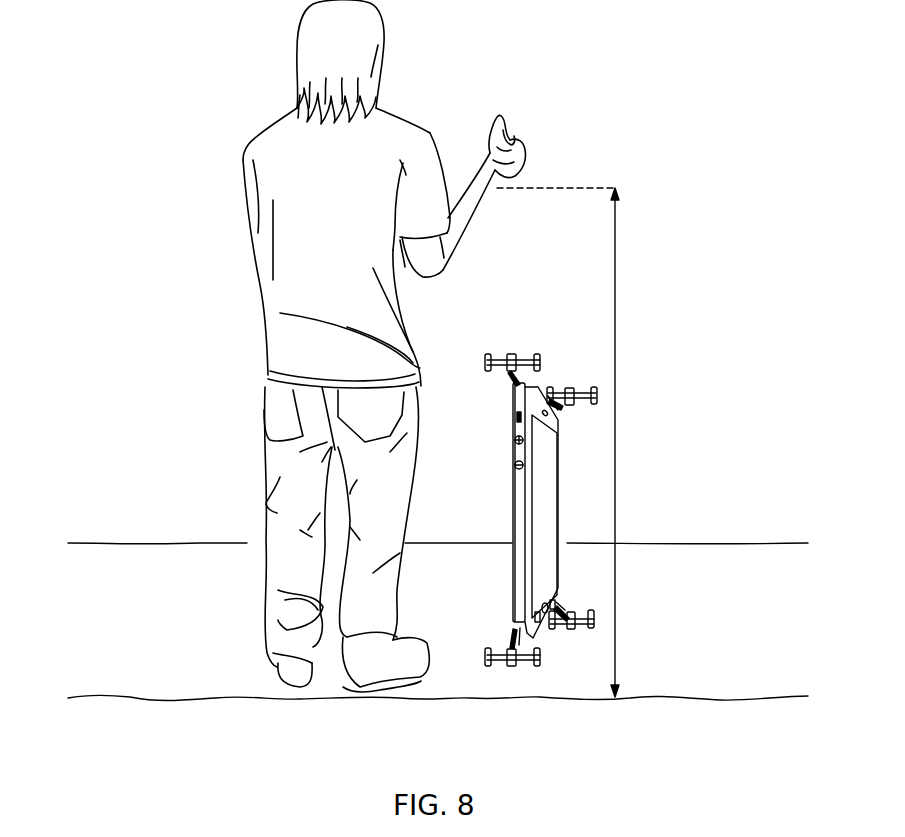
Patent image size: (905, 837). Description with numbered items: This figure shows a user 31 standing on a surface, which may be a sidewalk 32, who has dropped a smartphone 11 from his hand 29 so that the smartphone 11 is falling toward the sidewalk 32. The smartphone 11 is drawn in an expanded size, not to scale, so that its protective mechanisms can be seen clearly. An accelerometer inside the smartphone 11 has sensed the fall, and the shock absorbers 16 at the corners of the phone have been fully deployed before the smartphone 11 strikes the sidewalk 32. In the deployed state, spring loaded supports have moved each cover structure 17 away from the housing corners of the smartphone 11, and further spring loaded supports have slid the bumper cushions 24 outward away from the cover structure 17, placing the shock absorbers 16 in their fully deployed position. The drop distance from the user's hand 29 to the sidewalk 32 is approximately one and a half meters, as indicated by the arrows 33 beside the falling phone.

The smartphone 11 is at (553, 495).
The shock absorbers 16 is at (485, 355).
The cover structure 17 is at (512, 360).
The bumper cushions 24 is at (494, 359).
The hand 29 is at (505, 130).
The user 31 is at (265, 242).
The sidewalk 32 is at (740, 543).
The arrows 33 is at (622, 287).